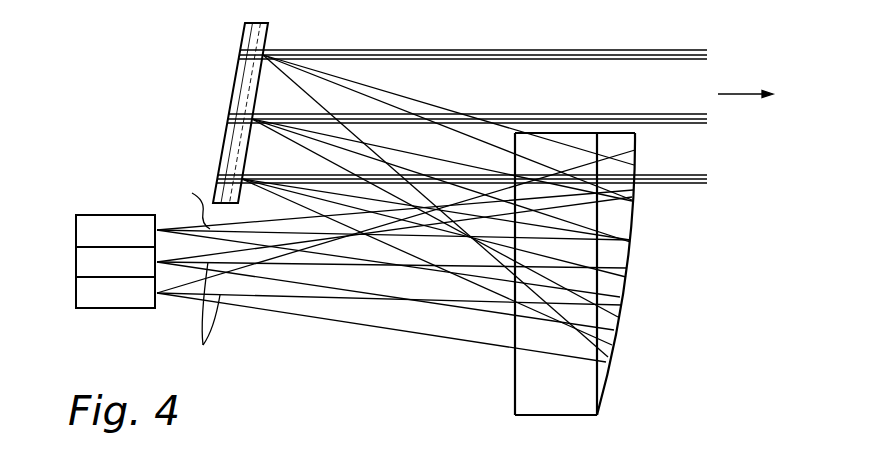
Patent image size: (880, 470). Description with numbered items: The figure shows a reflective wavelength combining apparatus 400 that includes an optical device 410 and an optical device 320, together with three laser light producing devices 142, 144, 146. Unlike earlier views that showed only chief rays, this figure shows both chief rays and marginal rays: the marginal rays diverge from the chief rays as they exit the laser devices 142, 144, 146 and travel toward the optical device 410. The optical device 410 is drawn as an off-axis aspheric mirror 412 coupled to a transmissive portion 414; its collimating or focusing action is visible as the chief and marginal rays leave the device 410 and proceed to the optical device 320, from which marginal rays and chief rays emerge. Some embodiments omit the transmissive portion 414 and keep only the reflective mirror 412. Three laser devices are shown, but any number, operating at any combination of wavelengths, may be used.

The laser light producing device 142 is at (112, 215).
The laser light producing device 144 is at (76, 267).
The laser light producing device 146 is at (112, 308).
The optical device 320 is at (232, 101).
The wavelength combining apparatus 400 is at (320, 349).
The optical device 410 is at (561, 285).
The off-axis aspheric mirror 412 is at (611, 376).
The transmissive portion 414 is at (515, 381).